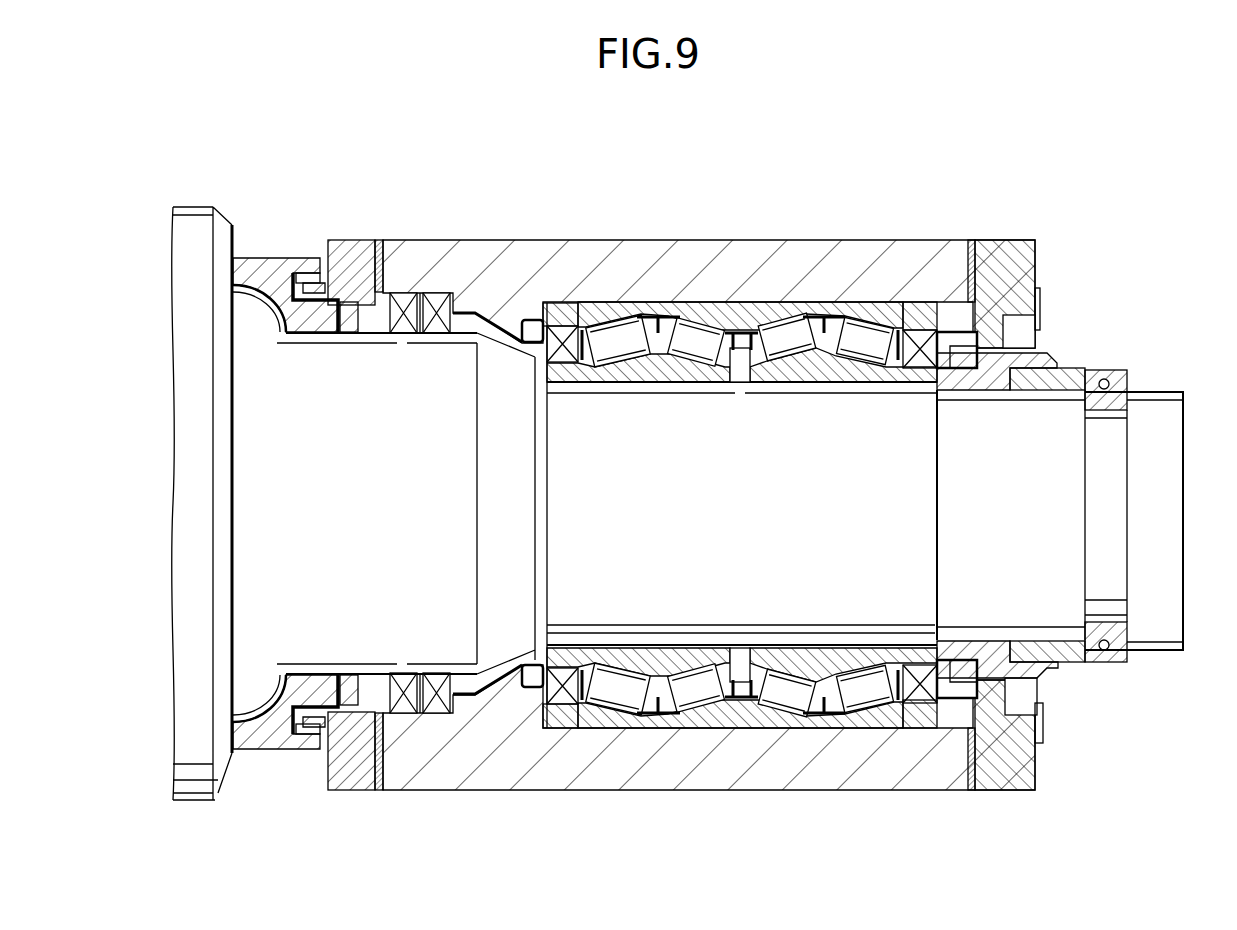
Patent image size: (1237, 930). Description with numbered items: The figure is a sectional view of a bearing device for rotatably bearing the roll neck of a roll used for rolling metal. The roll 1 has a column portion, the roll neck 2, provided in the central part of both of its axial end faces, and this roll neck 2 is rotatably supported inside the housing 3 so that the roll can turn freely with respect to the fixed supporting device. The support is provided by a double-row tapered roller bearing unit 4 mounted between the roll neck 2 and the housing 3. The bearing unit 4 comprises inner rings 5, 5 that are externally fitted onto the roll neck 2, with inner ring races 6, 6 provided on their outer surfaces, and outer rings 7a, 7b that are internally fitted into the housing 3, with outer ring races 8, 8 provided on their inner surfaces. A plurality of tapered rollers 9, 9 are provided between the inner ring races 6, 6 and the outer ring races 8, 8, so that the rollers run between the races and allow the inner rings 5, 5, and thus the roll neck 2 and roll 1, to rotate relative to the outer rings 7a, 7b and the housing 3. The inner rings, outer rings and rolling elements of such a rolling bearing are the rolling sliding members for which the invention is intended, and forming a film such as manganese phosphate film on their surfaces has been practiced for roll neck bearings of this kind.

The roll 1 is at (190, 232).
The roll neck 2 is at (912, 527).
The housing 3 is at (446, 262).
The double-row tapered roller bearing unit 4 is at (742, 506).
The inner rings 5 is at (632, 378).
The inner ring races 6 is at (697, 337).
The outer ring 7a is at (722, 302).
The outer ring 7b is at (597, 320).
The outer ring races 8 is at (690, 332).
The tapered rollers 9 is at (868, 330).